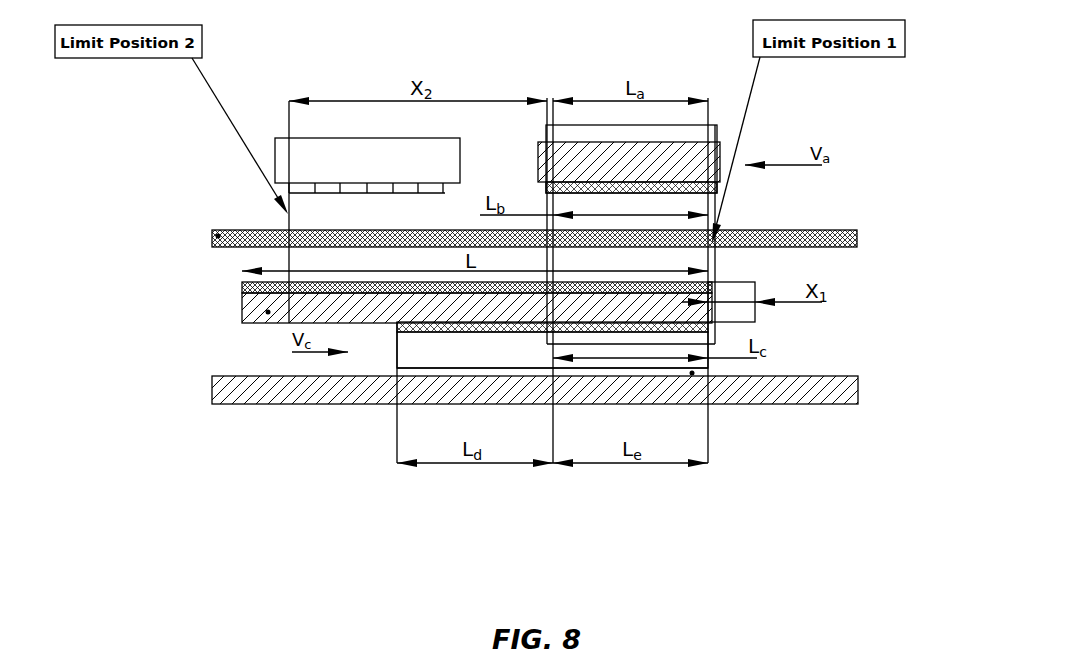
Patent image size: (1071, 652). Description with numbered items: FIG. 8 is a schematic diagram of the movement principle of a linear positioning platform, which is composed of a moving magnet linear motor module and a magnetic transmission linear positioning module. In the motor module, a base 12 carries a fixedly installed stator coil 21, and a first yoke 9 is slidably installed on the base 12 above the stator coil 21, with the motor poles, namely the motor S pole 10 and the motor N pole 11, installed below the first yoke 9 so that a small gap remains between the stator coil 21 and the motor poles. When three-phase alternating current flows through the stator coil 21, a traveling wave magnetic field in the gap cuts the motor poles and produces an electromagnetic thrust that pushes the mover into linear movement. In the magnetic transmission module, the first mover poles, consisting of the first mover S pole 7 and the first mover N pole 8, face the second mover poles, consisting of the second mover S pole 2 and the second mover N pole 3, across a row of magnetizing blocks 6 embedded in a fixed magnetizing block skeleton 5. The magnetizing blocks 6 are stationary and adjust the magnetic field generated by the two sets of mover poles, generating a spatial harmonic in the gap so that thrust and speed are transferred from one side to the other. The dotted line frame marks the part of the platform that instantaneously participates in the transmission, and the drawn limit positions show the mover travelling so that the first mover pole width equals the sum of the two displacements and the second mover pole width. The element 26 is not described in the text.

The second mover S pole 2 is at (700, 193).
The second mover N pole 3 is at (690, 190).
The magnetizing block skeleton 5 is at (218, 236).
The magnetizing block 6 is at (215, 236).
The first mover S pole 7 is at (246, 285).
The first mover N pole 8 is at (243, 293).
The first yoke 9 is at (268, 312).
The motor S pole 10 is at (450, 326).
The motor N pole 11 is at (497, 327).
The base 12 is at (602, 393).
The stator coil 21 is at (692, 373).
The movable member 26 is at (650, 160).